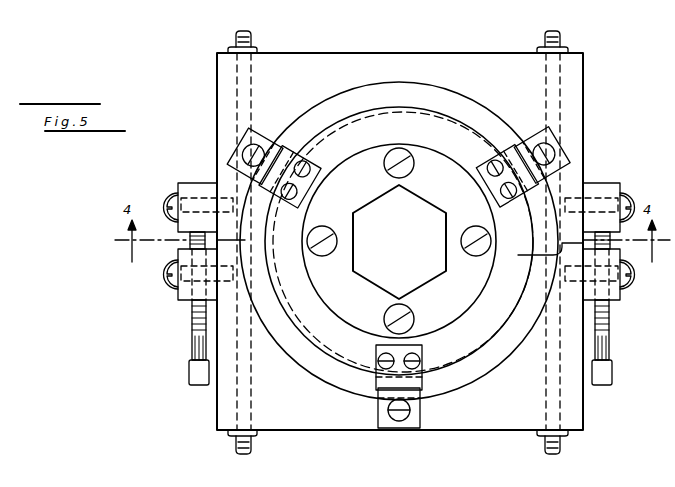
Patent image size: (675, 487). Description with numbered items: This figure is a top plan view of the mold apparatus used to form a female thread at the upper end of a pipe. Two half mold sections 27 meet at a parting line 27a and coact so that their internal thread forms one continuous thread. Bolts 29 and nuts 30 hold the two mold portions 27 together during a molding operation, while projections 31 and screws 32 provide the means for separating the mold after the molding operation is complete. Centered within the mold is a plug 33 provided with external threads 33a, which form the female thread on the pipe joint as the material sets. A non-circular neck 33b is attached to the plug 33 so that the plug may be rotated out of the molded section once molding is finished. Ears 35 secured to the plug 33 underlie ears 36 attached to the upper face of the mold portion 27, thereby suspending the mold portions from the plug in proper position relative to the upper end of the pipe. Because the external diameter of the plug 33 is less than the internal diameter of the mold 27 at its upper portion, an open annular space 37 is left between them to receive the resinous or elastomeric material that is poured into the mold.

The half mold section 27 is at (322, 53).
The parting line 27a is at (520, 255).
The bolt 29 is at (563, 41).
The nut 30 is at (540, 50).
The projection 31 is at (191, 183).
The screw 32 is at (194, 346).
The plug 33 is at (399, 231).
The external thread 33a is at (338, 358).
The non-circular neck 33b is at (428, 203).
The ear 35 is at (500, 132).
The ear 36 is at (530, 135).
The annular space 37 is at (399, 241).